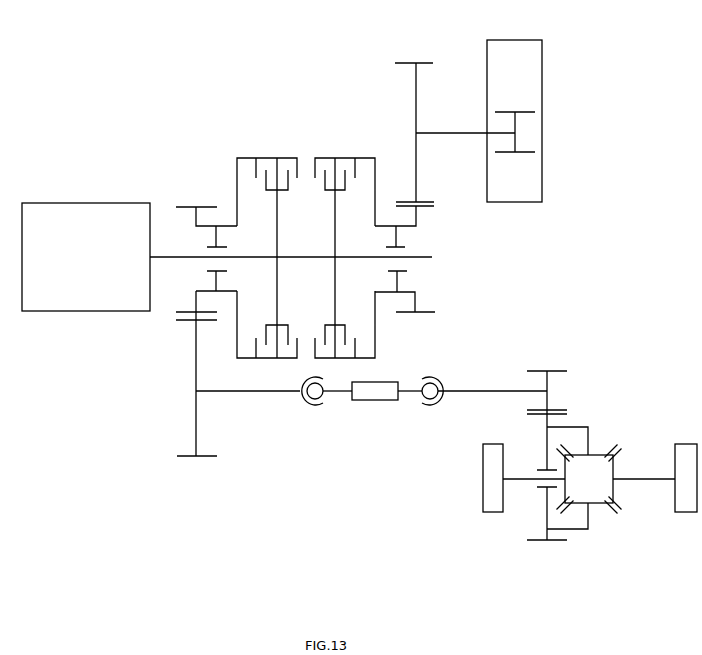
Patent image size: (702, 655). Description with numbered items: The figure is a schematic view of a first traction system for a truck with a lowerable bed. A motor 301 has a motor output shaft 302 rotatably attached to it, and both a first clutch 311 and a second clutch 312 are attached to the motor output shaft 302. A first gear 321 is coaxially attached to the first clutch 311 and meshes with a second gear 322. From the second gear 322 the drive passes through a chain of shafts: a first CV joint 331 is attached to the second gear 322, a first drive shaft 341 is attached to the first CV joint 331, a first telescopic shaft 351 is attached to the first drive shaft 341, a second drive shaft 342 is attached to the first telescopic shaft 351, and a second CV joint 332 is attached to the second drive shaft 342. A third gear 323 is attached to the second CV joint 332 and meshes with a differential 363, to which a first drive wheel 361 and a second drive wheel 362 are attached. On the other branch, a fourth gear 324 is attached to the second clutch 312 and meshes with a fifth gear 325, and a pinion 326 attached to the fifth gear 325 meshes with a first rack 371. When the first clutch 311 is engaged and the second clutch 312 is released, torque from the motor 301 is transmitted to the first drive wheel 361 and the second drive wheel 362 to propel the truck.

The motor 301 is at (87, 200).
The motor output shaft 302 is at (425, 255).
The first clutch 311 is at (276, 155).
The second clutch 312 is at (336, 155).
The first gear 321 is at (188, 204).
The second gear 322 is at (185, 462).
The third gear 323 is at (558, 365).
The fourth gear 324 is at (420, 315).
The fifth gear 325 is at (418, 60).
The pinion 326 is at (515, 110).
The first CV joint 331 is at (313, 420).
The second CV joint 332 is at (430, 412).
The first drive shaft 341 is at (338, 410).
The second drive shaft 342 is at (410, 410).
The first telescopic shaft 351 is at (375, 413).
The first drive wheel 361 is at (494, 516).
The second drive wheel 362 is at (690, 516).
The differential 363 is at (550, 548).
The first rack 371 is at (532, 205).